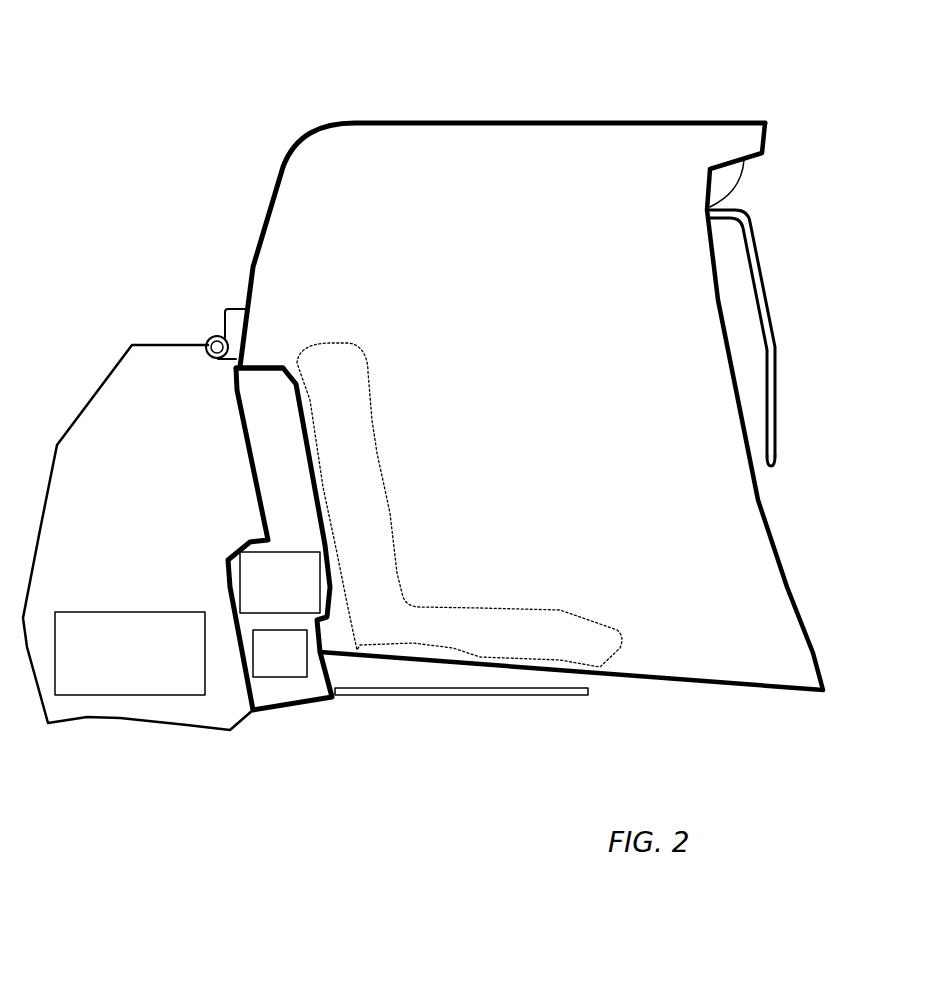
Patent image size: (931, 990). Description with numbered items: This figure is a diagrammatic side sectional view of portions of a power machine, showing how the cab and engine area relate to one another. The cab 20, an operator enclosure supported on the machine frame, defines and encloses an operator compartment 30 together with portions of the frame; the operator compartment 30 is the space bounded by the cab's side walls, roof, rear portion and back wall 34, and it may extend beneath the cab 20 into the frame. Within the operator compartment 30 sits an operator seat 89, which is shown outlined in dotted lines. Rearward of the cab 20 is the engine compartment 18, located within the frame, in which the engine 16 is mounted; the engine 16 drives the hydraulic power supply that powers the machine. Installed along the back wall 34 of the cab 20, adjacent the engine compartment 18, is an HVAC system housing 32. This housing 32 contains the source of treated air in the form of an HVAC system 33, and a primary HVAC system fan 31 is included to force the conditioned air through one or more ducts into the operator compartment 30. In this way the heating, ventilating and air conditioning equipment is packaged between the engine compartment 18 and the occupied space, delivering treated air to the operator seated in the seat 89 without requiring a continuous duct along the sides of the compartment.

The cab 20 is at (495, 121).
The operator compartment 30 is at (788, 289).
The HVAC system housing 32 is at (250, 472).
The back wall 34 is at (263, 368).
The operator seat 89 is at (367, 453).
The engine compartment 18 is at (217, 710).
The engine 16 is at (130, 653).
The HVAC system 33 is at (280, 582).
The primary HVAC system fan 31 is at (280, 653).